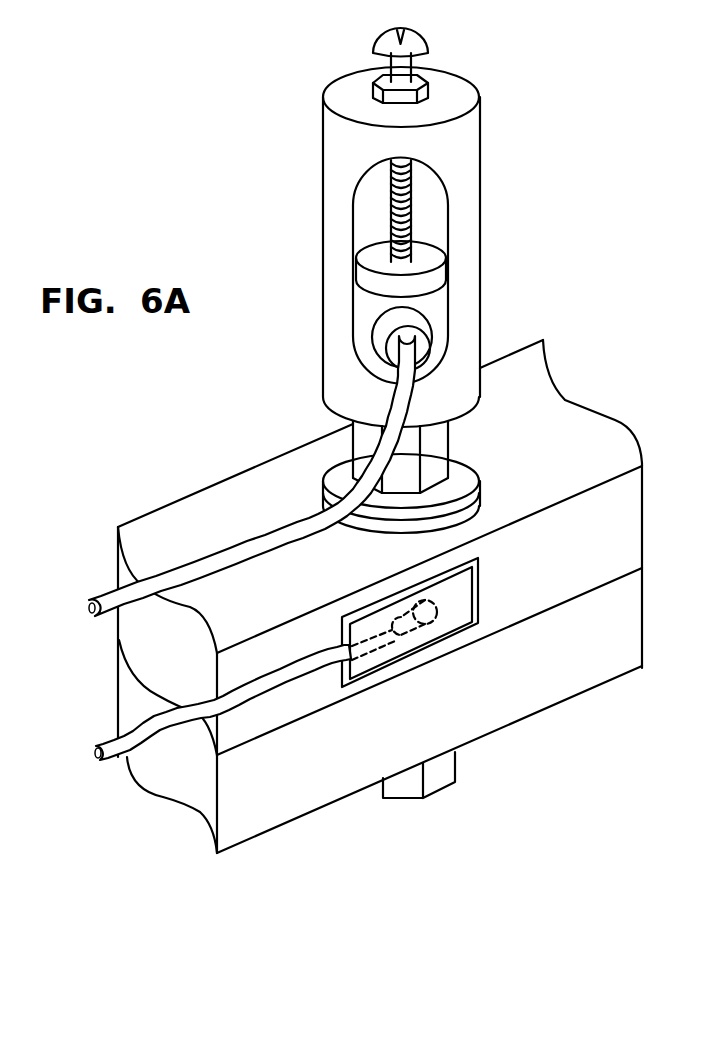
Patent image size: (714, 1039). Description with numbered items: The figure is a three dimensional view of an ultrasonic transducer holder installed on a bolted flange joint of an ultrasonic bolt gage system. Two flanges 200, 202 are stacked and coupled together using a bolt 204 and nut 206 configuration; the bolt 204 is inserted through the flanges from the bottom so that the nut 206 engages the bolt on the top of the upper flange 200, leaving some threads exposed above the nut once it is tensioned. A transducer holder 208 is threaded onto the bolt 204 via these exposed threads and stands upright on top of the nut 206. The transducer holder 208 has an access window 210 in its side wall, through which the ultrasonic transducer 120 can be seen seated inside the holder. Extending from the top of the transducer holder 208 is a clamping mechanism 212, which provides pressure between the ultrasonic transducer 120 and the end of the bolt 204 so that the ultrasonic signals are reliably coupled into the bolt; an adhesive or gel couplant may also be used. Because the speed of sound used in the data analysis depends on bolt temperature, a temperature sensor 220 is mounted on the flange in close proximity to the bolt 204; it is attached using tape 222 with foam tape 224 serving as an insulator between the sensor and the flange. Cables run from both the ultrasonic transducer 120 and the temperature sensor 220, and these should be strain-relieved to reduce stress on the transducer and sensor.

The ultrasonic transducer 120 is at (440, 315).
The flange 200 is at (232, 492).
The flange 202 is at (285, 793).
The bolt 204 is at (456, 766).
The nut 206 is at (438, 440).
The transducer holder 208 is at (333, 217).
The access window 210 is at (438, 212).
The clamping mechanism 212 is at (416, 189).
The temperature sensor 220 is at (433, 637).
The tape 222 is at (474, 583).
The foam tape 224 is at (478, 572).